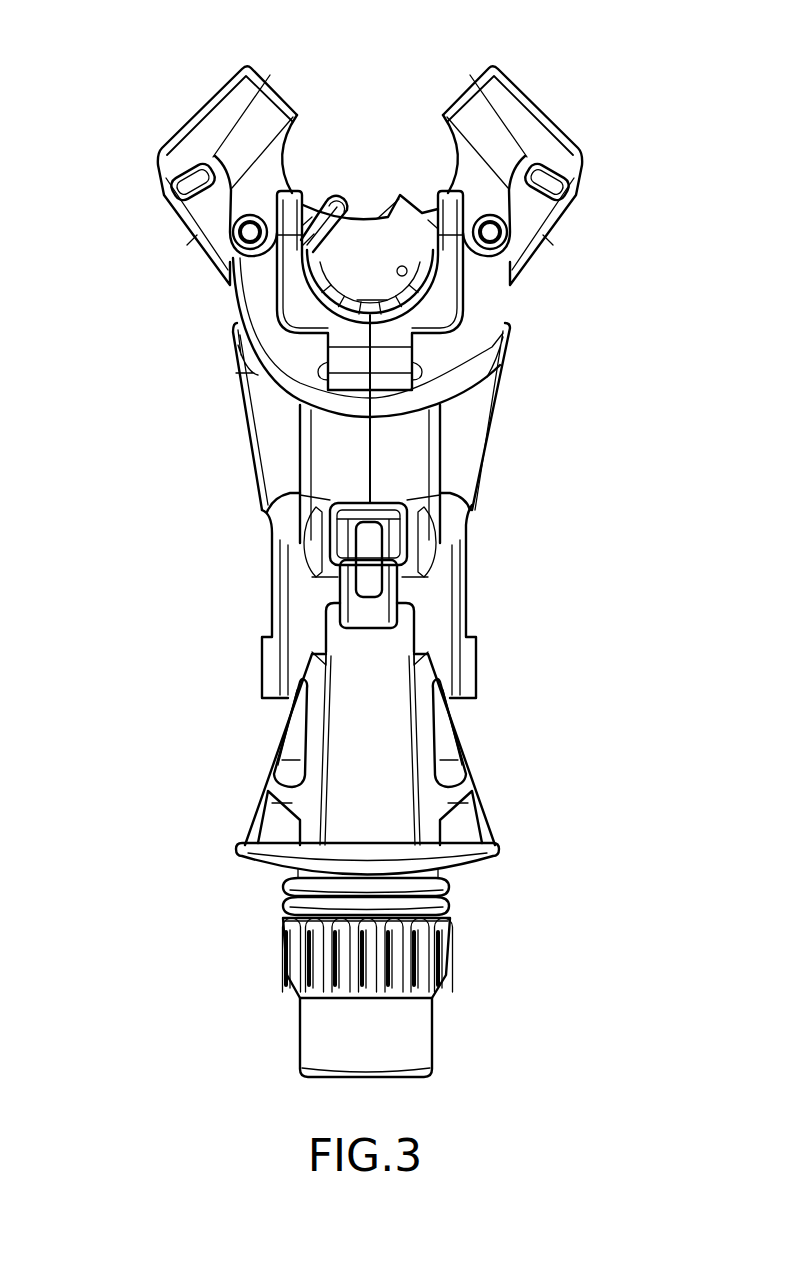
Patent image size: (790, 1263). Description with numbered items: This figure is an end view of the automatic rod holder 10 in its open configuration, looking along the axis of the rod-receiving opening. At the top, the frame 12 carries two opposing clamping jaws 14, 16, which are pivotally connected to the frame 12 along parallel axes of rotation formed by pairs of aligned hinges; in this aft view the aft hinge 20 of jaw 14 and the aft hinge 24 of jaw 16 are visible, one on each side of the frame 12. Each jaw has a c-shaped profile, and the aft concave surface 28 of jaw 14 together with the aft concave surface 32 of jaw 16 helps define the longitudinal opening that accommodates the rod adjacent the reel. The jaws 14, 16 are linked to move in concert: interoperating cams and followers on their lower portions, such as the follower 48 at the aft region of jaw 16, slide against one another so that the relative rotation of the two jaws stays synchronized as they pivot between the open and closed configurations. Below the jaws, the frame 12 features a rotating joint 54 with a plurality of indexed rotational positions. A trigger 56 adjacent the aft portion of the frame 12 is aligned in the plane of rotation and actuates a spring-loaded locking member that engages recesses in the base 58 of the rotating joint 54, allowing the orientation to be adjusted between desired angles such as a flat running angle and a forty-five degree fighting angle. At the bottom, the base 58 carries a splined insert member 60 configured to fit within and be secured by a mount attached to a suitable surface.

The rod holder 10 is at (333, 561).
The frame 12 is at (414, 400).
The clamping jaw 14 is at (194, 183).
The clamping jaw 16 is at (537, 175).
The aft hinge 20 is at (200, 257).
The aft hinge 24 is at (543, 250).
The aft concave surface 28 is at (370, 218).
The aft concave surface 32 is at (379, 197).
The follower 48 is at (328, 189).
The rotating joint 54 is at (414, 595).
The trigger 56 is at (450, 565).
The base 58 is at (423, 739).
The splined insert member 60 is at (403, 973).